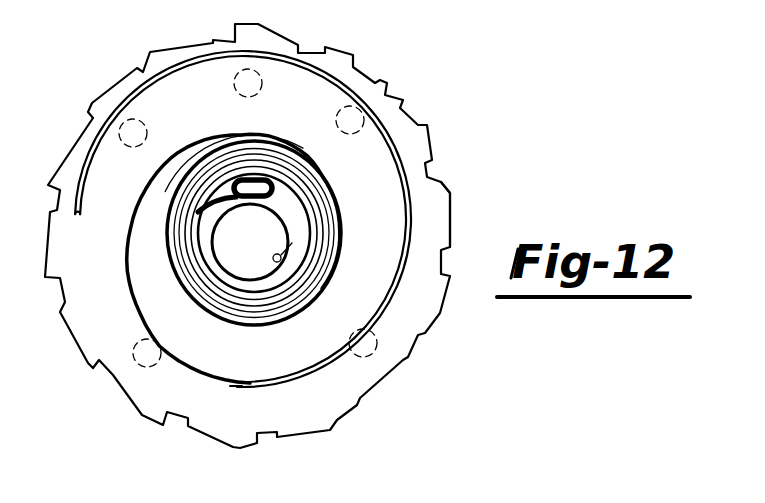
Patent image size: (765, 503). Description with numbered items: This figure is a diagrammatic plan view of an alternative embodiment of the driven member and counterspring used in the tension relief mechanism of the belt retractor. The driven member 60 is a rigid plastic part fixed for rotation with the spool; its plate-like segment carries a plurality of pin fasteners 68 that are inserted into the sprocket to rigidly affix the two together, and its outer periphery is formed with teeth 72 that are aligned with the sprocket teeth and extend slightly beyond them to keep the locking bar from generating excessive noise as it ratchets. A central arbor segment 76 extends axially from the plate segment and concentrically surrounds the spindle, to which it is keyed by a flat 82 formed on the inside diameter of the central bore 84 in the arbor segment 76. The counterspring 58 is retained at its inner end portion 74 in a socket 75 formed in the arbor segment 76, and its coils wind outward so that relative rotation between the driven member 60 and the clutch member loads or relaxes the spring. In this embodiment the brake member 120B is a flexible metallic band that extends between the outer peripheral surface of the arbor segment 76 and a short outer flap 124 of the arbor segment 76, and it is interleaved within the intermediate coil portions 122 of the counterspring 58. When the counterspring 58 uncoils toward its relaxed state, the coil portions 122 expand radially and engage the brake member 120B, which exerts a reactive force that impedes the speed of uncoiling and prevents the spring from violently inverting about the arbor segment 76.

The counterspring 58 is at (354, 76).
The driven member 60 is at (428, 124).
The pin fasteners 68 is at (140, 358).
The teeth 72 is at (443, 198).
The inner end portion 74 is at (262, 141).
The socket 75 is at (217, 168).
The central arbor segment 76 is at (292, 242).
The flat 82 is at (240, 206).
The central bore 84 is at (281, 261).
The brake member 120B is at (185, 203).
The coil portions 122 is at (253, 325).
The outer flap 124 is at (168, 245).